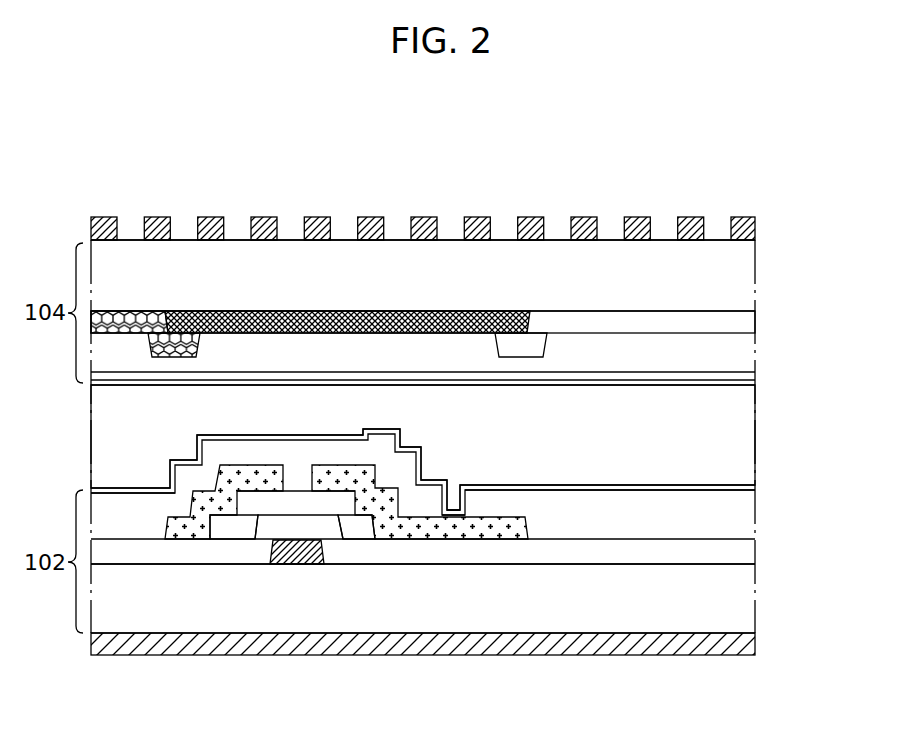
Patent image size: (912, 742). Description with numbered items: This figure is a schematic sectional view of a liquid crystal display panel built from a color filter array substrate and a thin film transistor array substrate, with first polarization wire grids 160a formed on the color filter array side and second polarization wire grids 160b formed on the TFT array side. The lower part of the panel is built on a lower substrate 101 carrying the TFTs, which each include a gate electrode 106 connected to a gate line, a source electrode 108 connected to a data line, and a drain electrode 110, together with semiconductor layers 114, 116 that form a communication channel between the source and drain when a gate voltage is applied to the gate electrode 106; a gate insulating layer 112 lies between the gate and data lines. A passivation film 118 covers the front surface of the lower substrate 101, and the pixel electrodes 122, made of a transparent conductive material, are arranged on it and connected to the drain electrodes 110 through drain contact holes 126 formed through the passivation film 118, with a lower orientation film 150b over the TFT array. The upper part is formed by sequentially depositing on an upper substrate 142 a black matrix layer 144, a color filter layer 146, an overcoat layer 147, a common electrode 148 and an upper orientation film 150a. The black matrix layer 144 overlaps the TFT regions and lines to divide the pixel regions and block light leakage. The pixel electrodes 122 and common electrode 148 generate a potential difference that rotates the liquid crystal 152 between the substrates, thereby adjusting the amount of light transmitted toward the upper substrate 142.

The lower substrate 101 is at (750, 603).
The gate electrode 106 is at (300, 552).
The source electrode 108 is at (192, 522).
The drain electrode 110 is at (432, 533).
The gate insulating layer 112 is at (750, 552).
The semiconductor layer 114 is at (234, 527).
The semiconductor layer 116 is at (367, 527).
The passivation film 118 is at (748, 522).
The pixel electrode 122 is at (747, 491).
The drain contact hole 126 is at (462, 512).
The upper substrate 142 is at (757, 285).
The black matrix layer 144 is at (323, 320).
The color filter layer 146 is at (757, 322).
The overcoat layer 147 is at (750, 357).
The common electrode 148 is at (745, 377).
The upper orientation film 150a is at (748, 390).
The lower orientation film 150b is at (747, 487).
The liquid crystal 152 is at (757, 435).
The first polarization wire grids 160a is at (757, 230).
The second polarization wire grids 160b is at (757, 645).